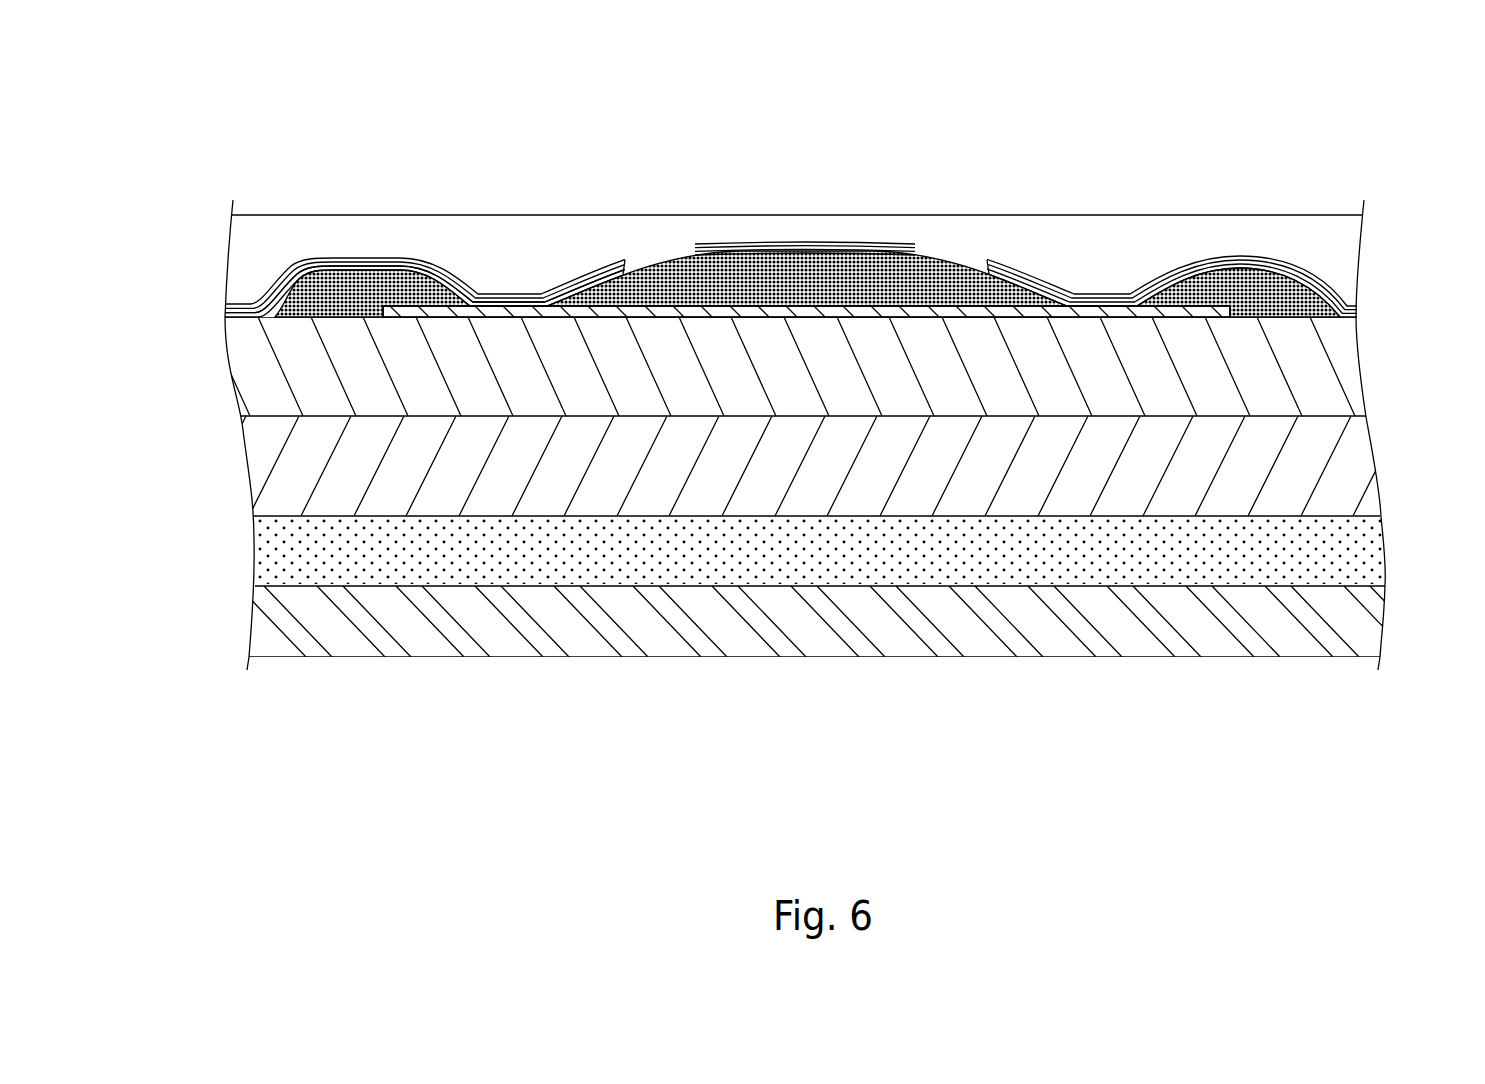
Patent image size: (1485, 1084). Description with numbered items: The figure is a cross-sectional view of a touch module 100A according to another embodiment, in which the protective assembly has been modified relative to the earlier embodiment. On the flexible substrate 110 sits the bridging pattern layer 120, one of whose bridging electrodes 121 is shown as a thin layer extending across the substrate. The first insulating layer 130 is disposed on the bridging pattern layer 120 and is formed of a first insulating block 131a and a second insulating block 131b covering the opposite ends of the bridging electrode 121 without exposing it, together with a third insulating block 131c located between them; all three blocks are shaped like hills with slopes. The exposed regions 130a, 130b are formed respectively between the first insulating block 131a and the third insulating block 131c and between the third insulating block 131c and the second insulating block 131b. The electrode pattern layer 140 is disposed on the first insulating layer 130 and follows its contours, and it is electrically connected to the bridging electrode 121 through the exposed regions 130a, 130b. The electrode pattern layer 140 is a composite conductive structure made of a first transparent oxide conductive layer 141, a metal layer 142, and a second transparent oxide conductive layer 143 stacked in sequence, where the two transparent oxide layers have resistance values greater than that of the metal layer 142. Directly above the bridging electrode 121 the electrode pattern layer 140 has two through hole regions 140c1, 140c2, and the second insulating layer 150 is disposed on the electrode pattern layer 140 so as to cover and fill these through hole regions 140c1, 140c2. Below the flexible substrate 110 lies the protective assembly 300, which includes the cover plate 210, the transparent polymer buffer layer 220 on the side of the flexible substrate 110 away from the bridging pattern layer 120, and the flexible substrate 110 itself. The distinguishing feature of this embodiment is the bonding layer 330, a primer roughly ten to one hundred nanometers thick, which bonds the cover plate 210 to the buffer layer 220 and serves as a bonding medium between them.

The touch module 100A is at (1465, 89).
The flexible substrate 110 is at (1354, 375).
The bridging pattern layer 120 is at (806, 311).
The bridging electrode 121 is at (900, 310).
The first insulating layer 130 is at (805, 591).
The first insulating block 131a is at (327, 308).
The second insulating block 131b is at (1283, 310).
The third insulating block 131c is at (780, 287).
The exposed region 130a is at (516, 279).
The exposed region 130b is at (1106, 275).
The electrode pattern layer 140 is at (791, 226).
The first transparent oxide conductive layer 141 is at (1218, 268).
The metal layer 142 is at (1266, 264).
The second transparent oxide conductive layer 143 is at (1182, 185).
The through hole region 140c1 is at (668, 232).
The through hole region 140c2 is at (957, 233).
The second insulating layer 150 is at (306, 236).
The cover plate 210 is at (1354, 630).
The buffer layer 220 is at (1354, 462).
The protective assembly 300 is at (784, 571).
The bonding layer 330 is at (1354, 560).